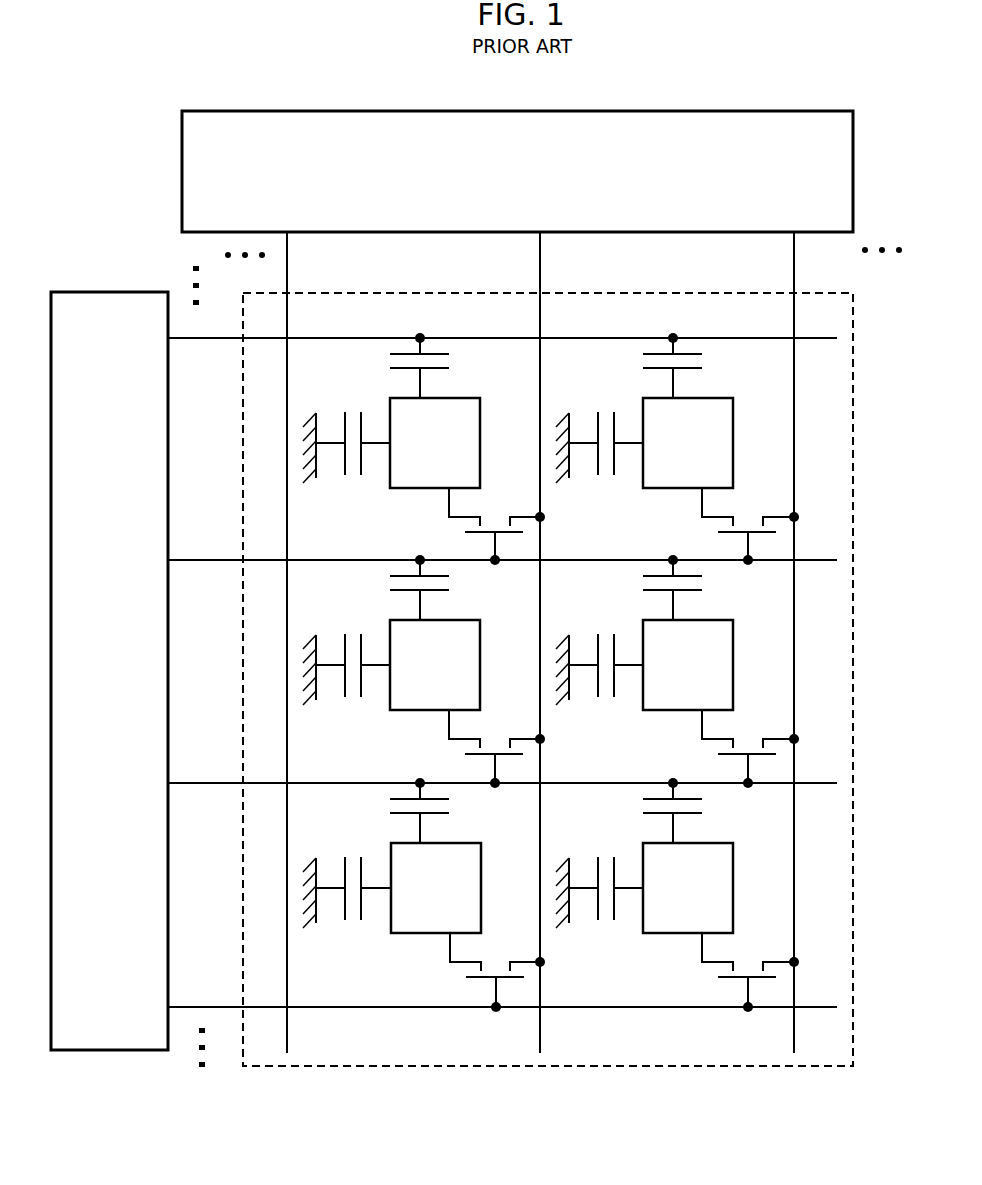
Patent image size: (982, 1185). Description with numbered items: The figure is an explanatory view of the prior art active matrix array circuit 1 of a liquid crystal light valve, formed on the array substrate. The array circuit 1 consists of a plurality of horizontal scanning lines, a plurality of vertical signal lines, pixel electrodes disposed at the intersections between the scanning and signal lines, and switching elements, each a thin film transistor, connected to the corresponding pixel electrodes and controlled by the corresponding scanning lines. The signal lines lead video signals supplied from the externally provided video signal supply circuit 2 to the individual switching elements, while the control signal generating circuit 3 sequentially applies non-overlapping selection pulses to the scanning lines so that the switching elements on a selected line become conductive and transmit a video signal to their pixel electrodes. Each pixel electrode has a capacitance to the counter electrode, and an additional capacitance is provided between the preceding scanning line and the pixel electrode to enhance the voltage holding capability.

The active matrix array circuit 1 is at (290, 1066).
The video signal supply circuit 2 is at (678, 110).
The control signal generating circuit 3 is at (130, 293).